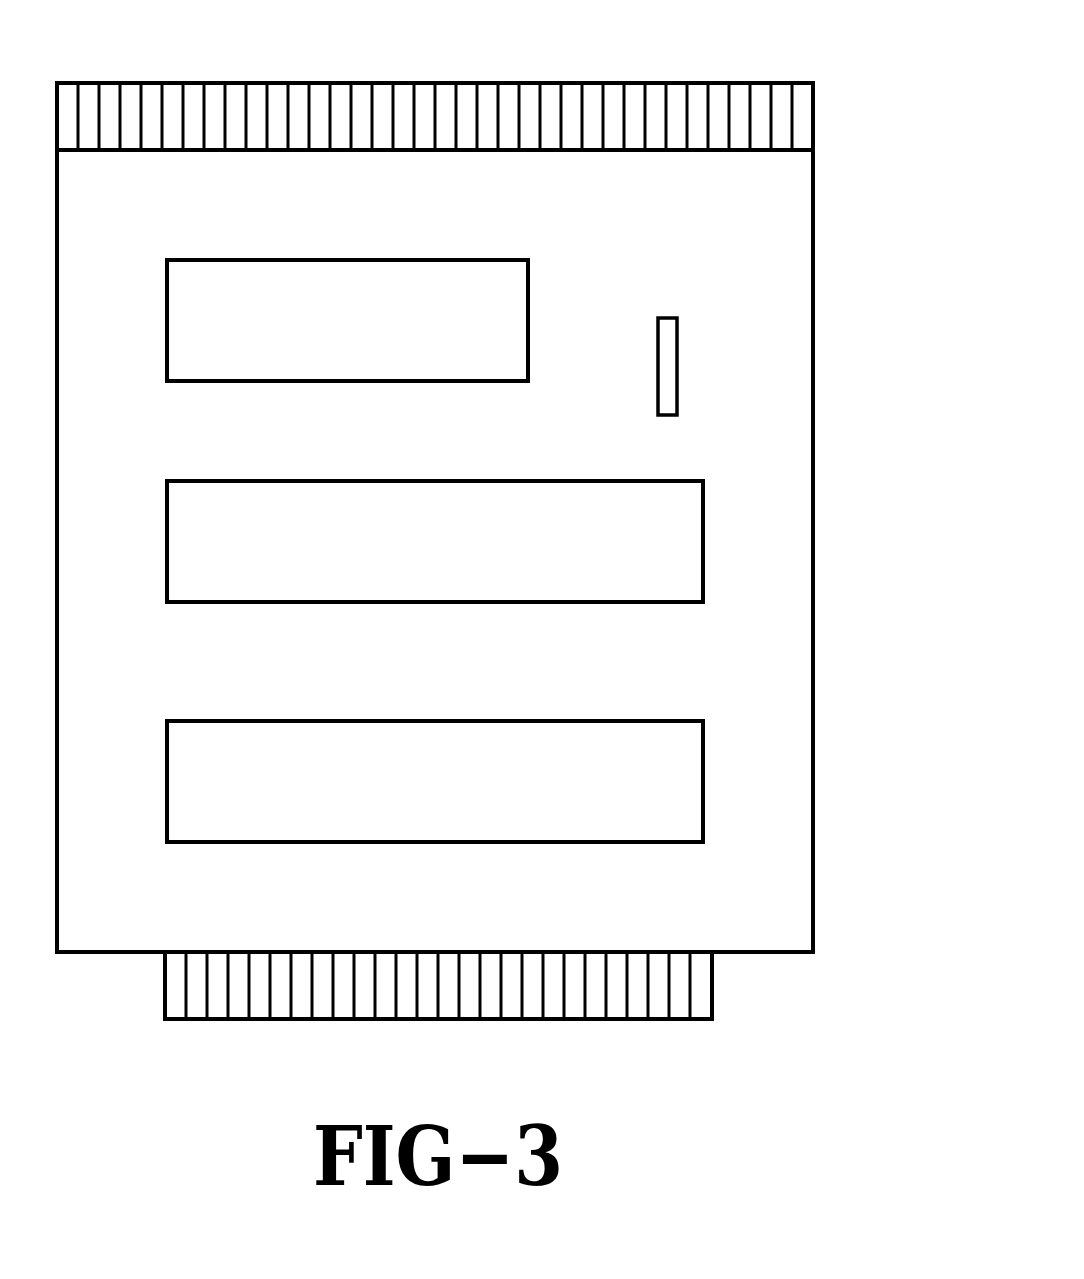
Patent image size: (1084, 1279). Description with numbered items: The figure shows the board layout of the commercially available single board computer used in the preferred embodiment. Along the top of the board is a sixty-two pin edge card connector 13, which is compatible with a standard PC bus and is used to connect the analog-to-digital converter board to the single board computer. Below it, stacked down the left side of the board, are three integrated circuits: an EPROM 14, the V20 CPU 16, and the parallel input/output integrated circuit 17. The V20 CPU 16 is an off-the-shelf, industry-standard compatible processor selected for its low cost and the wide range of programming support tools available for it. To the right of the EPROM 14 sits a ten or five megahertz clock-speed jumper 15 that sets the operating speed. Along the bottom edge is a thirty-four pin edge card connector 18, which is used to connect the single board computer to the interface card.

The 62 pin edge card connector 13 is at (657, 83).
The EPROM 14 is at (215, 260).
The 10/5 MHz jumper 15 is at (677, 365).
The V20 CPU 16 is at (215, 481).
The 8155 parallel I/O integrated circuit 17 is at (215, 721).
The 34 pin edge card connector 18 is at (658, 1019).